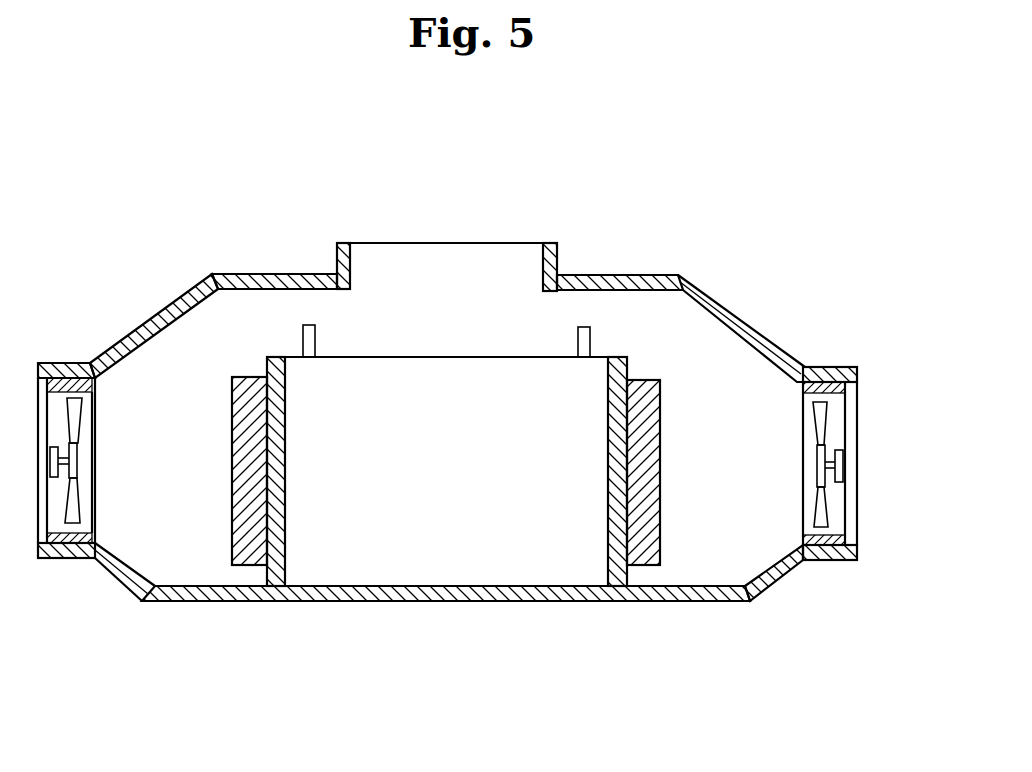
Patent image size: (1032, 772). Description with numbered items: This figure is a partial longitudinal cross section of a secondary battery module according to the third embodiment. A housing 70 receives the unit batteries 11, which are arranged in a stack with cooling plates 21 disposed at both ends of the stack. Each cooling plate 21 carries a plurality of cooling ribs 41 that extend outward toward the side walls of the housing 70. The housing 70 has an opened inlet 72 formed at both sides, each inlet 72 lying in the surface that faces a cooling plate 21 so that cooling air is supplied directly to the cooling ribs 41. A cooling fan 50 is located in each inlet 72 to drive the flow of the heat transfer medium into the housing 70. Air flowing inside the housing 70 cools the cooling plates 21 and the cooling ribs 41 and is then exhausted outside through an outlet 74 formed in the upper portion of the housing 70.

The unit batteries 11 is at (435, 347).
The cooling plates 21 is at (283, 566).
The cooling ribs 41 is at (233, 542).
The cooling fan 50 is at (844, 463).
The housing 70 is at (731, 311).
The inlet 72 is at (858, 407).
The outlet 74 is at (508, 243).